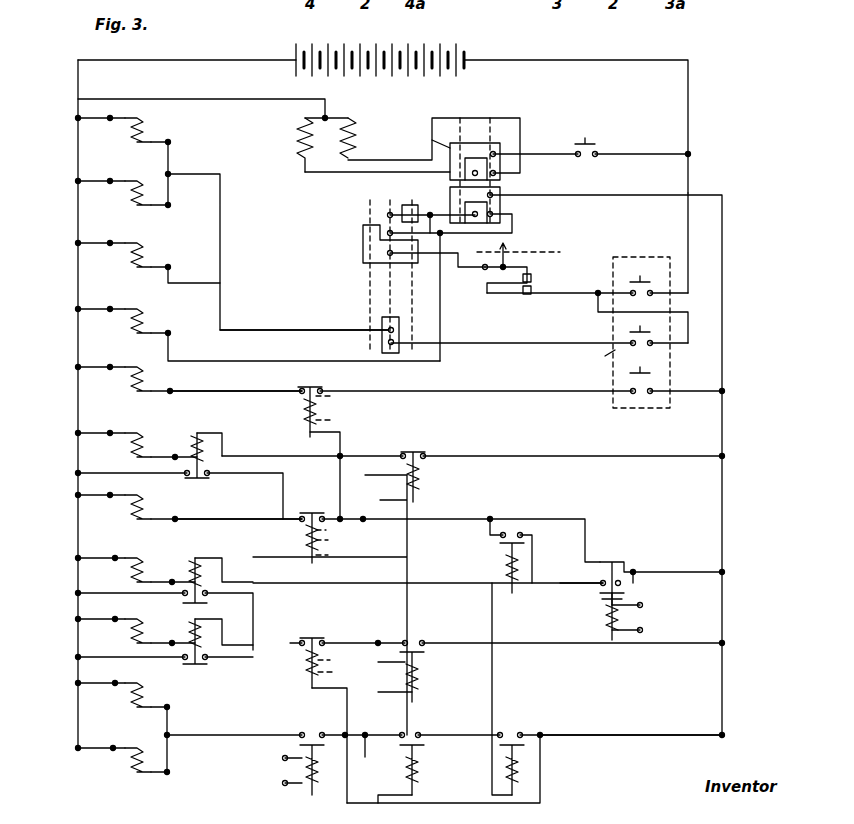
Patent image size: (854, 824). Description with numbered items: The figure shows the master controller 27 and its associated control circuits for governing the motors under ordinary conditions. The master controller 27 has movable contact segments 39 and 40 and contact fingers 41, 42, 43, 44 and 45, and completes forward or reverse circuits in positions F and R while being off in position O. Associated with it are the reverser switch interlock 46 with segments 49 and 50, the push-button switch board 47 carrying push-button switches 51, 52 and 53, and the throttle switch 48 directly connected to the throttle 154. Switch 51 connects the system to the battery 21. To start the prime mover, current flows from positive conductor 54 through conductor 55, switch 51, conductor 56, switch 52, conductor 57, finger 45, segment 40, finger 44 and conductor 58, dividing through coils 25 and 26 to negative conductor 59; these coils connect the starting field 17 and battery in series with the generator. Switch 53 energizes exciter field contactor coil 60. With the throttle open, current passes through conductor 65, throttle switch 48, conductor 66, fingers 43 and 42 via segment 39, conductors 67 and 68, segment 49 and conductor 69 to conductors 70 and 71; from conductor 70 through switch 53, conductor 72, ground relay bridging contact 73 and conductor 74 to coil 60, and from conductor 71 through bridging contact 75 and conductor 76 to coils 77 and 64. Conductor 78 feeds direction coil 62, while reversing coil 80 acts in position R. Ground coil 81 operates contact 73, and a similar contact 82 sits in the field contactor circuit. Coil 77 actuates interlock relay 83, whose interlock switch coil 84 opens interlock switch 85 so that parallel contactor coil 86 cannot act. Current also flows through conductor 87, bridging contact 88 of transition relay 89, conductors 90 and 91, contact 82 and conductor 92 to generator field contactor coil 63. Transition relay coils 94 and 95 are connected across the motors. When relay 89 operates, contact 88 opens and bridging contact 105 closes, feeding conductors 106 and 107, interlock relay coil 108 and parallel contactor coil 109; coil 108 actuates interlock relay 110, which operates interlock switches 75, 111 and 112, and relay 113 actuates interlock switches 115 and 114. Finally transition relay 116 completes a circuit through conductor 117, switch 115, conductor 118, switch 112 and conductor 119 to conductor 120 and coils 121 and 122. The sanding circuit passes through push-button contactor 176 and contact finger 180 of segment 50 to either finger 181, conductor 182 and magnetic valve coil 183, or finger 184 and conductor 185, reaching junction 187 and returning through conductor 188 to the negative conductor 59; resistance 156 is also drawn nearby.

The battery 21 is at (380, 72).
The coil 25 is at (142, 132).
The coil 26 is at (140, 176).
The master controller 27 is at (363, 235).
The movable contact segment 39 is at (363, 255).
The movable contact segment 40 is at (378, 343).
The contact finger 41 is at (388, 215).
The contact finger 42 is at (388, 233).
The contact finger 43 is at (388, 253).
The contact finger 44 is at (388, 328).
The contact finger 45 is at (394, 346).
The reverser switch interlock 46 is at (486, 136).
The push-button switch board 47 is at (612, 328).
The throttle switch 48 is at (530, 278).
The movable contact segment 49 is at (492, 214).
The movable contact segment 50 is at (432, 142).
The push-button switch 51 is at (625, 277).
The push-button switch 52 is at (630, 344).
The push-button switch 53 is at (626, 378).
The positive conductor 54 is at (688, 117).
The conductor 55 is at (688, 188).
The conductor 56 is at (598, 306).
The conductor 57 is at (534, 346).
The conductor 58 is at (304, 319).
The negative conductor 59 is at (77, 143).
The exciter field contactor coil 60 is at (130, 380).
The direction coil 62 is at (144, 321).
The generator field circuit contactor coil 63 is at (144, 508).
The series contactor coil 64 is at (150, 432).
The conductor 65 is at (546, 294).
The conductor 66 is at (474, 270).
The conductor 67 is at (423, 212).
The conductor 68 is at (506, 234).
The conductor 69 is at (610, 188).
The conductor 70 is at (675, 391).
The conductor 71 is at (652, 455).
The conductor 72 is at (526, 394).
The ground relay bridging contact 73 is at (322, 388).
The conductor 74 is at (232, 386).
The interlock switch 75 is at (428, 452).
The conductor 76 is at (357, 453).
The interlock relay coil 77 is at (201, 432).
The conductor 78 is at (452, 296).
The reversing coil 80 is at (144, 254).
The ground coil 81 is at (310, 475).
The ground relay bridging contact 82 is at (306, 512).
The interlock relay 83 is at (208, 480).
The interlock switch coil 84 is at (334, 671).
The interlock switch 85 is at (310, 636).
The parallel contactor coil 86 is at (142, 630).
The conductor 87 is at (662, 566).
The bridging contact 88 is at (614, 552).
The transition relay 89 is at (592, 580).
The conductor 90 is at (537, 517).
The conductor 91 is at (444, 517).
The conductor 92 is at (225, 515).
The transition relay coil 94 is at (599, 618).
The transition relay coil 95 is at (314, 792).
The bridging contact 105 is at (636, 592).
The conductor 106 is at (591, 608).
The conductor 107 is at (445, 580).
The interlock relay coil 108 is at (196, 552).
The parallel contactor coil 109 is at (142, 552).
The interlock relay 110 is at (205, 600).
The interlock switch 111 is at (426, 653).
The interlock switch 112 is at (424, 748).
The interlock relay 113 is at (196, 676).
The interlock switch 114 is at (496, 544).
The interlock switch 115 is at (514, 742).
The transition relay 116 is at (278, 748).
The conductor 117 is at (676, 742).
The conductor 118 is at (455, 723).
The conductor 119 is at (443, 769).
The conductor 120 is at (212, 734).
The coil 121 is at (126, 697).
The coil 122 is at (124, 760).
The throttle 154 is at (556, 248).
The resistance 156 is at (276, 150).
The push-button contactor 176 is at (590, 138).
The contact finger 180 is at (498, 152).
The contact finger 181 is at (497, 173).
The conductor 182 is at (396, 162).
The magnetic valve coil 183 is at (350, 139).
The contact finger 184 is at (493, 192).
The conductor 185 is at (324, 176).
The junction 187 is at (340, 108).
The conductor 188 is at (260, 100).
The starting field 17 is at (628, 324).